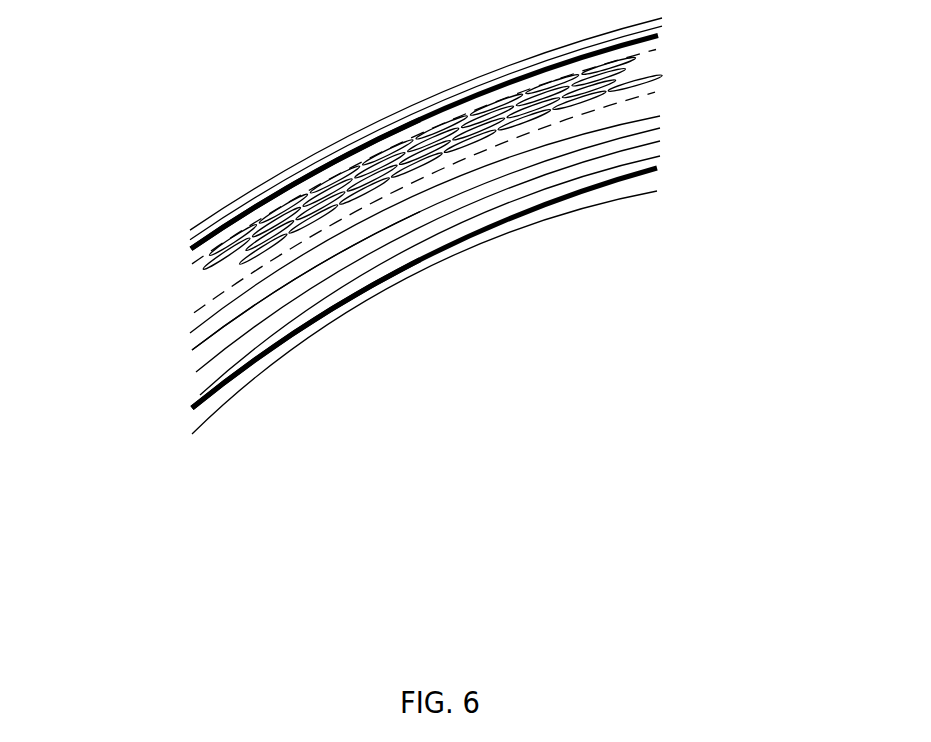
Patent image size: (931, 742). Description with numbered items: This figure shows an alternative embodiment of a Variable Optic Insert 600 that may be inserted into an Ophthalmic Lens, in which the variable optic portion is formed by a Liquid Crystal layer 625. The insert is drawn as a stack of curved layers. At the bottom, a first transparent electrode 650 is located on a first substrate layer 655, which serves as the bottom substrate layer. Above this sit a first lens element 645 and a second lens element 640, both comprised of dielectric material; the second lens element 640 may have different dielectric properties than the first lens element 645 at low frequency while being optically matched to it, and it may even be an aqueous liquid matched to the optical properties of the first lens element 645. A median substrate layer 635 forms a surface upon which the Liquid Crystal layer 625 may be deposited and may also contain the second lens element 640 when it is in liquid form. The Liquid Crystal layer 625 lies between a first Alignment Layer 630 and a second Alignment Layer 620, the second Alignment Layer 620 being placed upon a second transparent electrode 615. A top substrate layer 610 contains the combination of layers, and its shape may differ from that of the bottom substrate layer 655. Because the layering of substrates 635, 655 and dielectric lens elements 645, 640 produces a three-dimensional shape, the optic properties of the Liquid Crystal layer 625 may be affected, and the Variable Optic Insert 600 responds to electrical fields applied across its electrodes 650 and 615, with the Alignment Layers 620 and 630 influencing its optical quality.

The Variable Optic Insert 600 is at (528, 320).
The top substrate layer 610 is at (657, 37).
The second transparent electrode 615 is at (192, 250).
The second Alignment Layer 620 is at (655, 52).
The Liquid Crystal layer 625 is at (196, 287).
The first Alignment Layer 630 is at (653, 96).
The median substrate layer 635 is at (657, 118).
The second lens element 640 is at (197, 352).
The first lens element 645 is at (192, 408).
The first transparent electrode 650 is at (657, 168).
The first substrate layer 655 is at (192, 434).